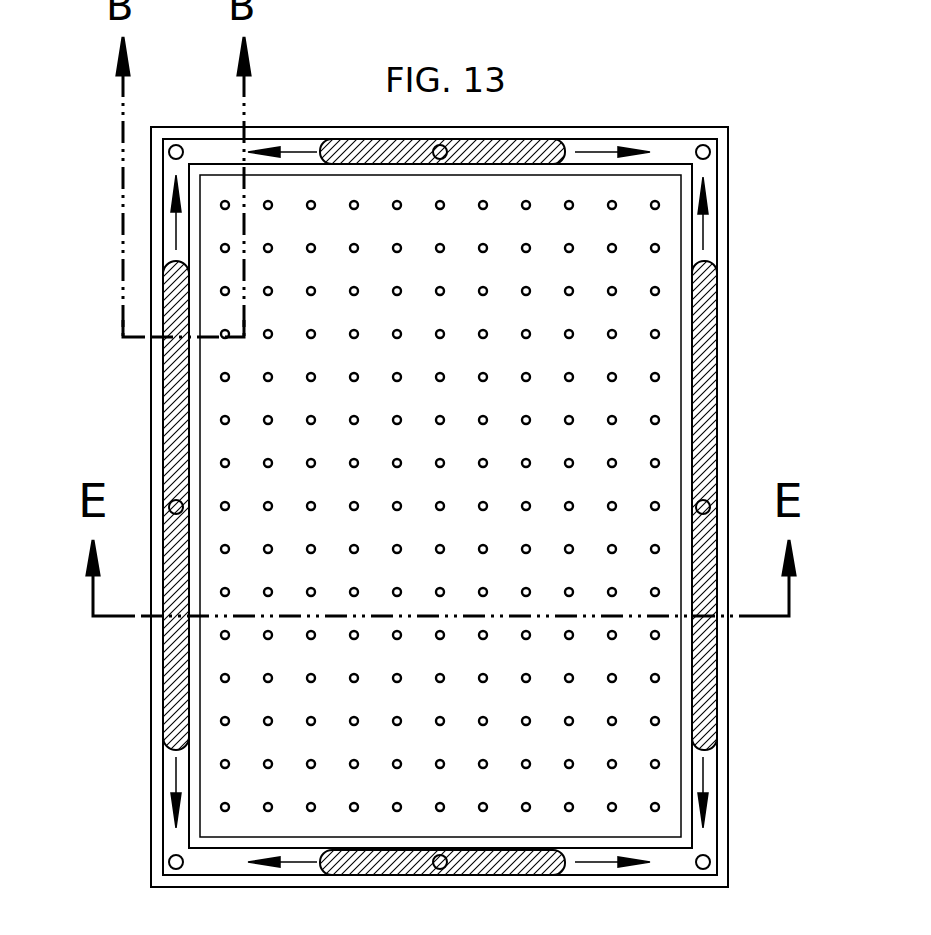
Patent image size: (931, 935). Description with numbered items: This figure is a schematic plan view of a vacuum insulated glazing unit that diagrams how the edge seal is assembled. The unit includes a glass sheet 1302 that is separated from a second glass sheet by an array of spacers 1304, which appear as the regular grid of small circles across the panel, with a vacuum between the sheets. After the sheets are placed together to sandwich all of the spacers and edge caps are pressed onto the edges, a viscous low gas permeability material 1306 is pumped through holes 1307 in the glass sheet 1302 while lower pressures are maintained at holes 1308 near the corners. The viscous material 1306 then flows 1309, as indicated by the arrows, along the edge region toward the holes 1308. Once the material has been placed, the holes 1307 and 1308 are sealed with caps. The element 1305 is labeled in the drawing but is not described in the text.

The glass sheet 1302 is at (460, 928).
The spacers 1304 is at (660, 716).
The frame 1305 is at (705, 840).
The viscous low gas permeability material 1306 is at (486, 140).
The holes 1307 is at (437, 146).
The holes 1308 is at (178, 145).
The flow 1309 is at (270, 150).